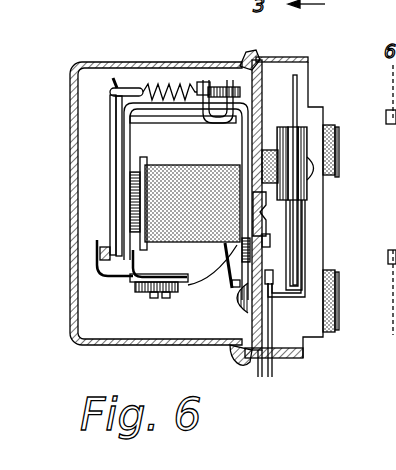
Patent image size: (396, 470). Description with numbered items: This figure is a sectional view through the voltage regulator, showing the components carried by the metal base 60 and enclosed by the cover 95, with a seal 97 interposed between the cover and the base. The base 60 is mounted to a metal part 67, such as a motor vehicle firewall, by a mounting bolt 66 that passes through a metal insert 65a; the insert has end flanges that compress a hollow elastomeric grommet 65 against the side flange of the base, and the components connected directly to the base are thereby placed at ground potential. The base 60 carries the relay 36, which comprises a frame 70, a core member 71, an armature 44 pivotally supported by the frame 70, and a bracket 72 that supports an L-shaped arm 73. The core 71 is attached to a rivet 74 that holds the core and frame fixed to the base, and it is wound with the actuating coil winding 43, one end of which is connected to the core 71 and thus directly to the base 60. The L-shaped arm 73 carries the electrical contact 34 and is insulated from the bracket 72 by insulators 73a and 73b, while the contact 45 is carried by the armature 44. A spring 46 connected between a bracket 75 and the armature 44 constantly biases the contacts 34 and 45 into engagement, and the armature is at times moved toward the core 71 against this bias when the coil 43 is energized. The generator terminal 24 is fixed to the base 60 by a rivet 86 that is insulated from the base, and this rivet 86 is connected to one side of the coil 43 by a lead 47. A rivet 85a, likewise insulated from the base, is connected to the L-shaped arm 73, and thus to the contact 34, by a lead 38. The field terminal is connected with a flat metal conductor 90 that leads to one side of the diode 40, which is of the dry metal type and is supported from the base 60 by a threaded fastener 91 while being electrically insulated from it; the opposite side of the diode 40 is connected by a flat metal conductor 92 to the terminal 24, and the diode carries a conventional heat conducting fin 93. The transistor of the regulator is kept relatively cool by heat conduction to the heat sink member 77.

The cover 95 is at (82, 62).
The seal 97 is at (252, 56).
The metal base 60 is at (298, 58).
The relay 36 is at (105, 156).
The armature 44 is at (118, 155).
The spring 46 is at (150, 82).
The bracket 75 is at (212, 78).
The frame 70 is at (197, 125).
The actuating coil winding 43 is at (188, 185).
The insulator 73b is at (168, 276).
The core member 71 is at (128, 200).
The rivet 74 is at (258, 213).
The contact 45 is at (107, 243).
The electrical contact 34 is at (100, 257).
The bracket 72 is at (133, 256).
The L-shaped arm 73 is at (103, 278).
The insulator 73a is at (133, 284).
The lead 38 is at (190, 290).
The lead 47 is at (227, 248).
The rivet 86 is at (242, 302).
The heat conducting fin 93 is at (297, 95).
The diode 40 is at (298, 127).
The threaded fastener 91 is at (318, 163).
The metal insert 65a is at (335, 173).
The elastomeric grommet 65 is at (328, 127).
The rivet 85a is at (263, 247).
The flat metal conductor 92 is at (300, 250).
The flat metal conductor 90 is at (284, 298).
The generator terminal 24 is at (272, 368).
The metal part 67 is at (395, 205).
The mounting bolt 66 is at (388, 330).
The heat sink member 77 is at (362, 7).